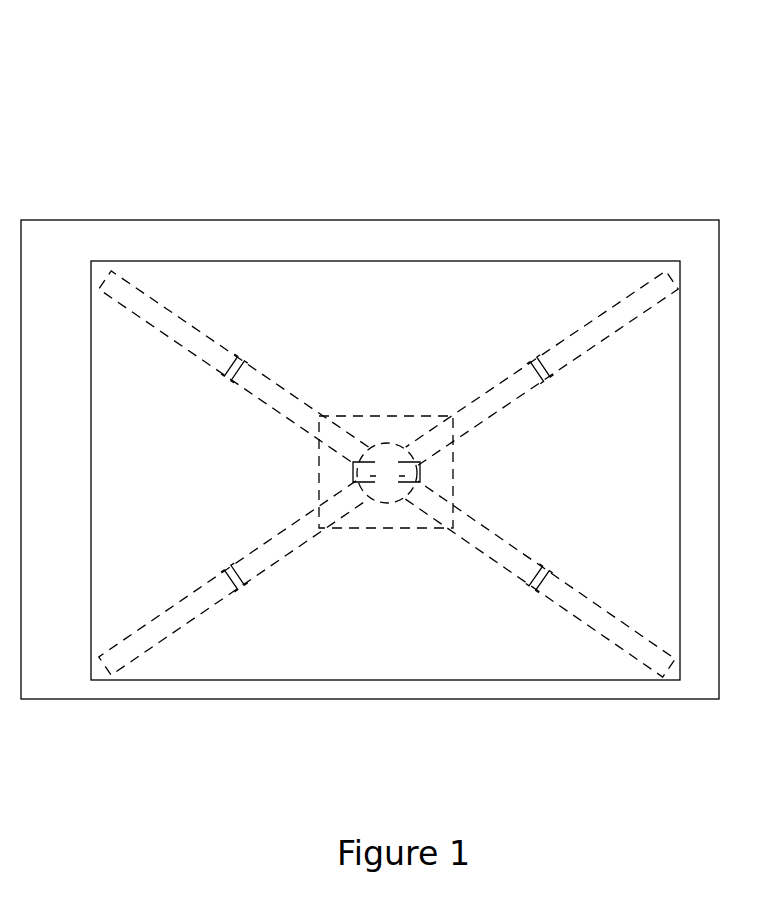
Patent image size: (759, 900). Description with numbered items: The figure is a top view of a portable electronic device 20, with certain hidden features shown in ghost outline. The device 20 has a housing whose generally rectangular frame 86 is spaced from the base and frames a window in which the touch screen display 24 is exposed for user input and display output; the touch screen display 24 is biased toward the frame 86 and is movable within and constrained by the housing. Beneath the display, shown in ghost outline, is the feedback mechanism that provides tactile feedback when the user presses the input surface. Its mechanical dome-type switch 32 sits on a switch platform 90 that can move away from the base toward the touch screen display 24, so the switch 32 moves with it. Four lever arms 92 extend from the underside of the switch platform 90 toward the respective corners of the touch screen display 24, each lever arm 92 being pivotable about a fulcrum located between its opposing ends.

The portable electronic device 20 is at (580, 74).
The touch screen display 24 is at (505, 287).
The switch 32 is at (385, 462).
The frame 86 is at (255, 699).
The switch platform 90 is at (415, 522).
The lever arms 92 is at (296, 408).